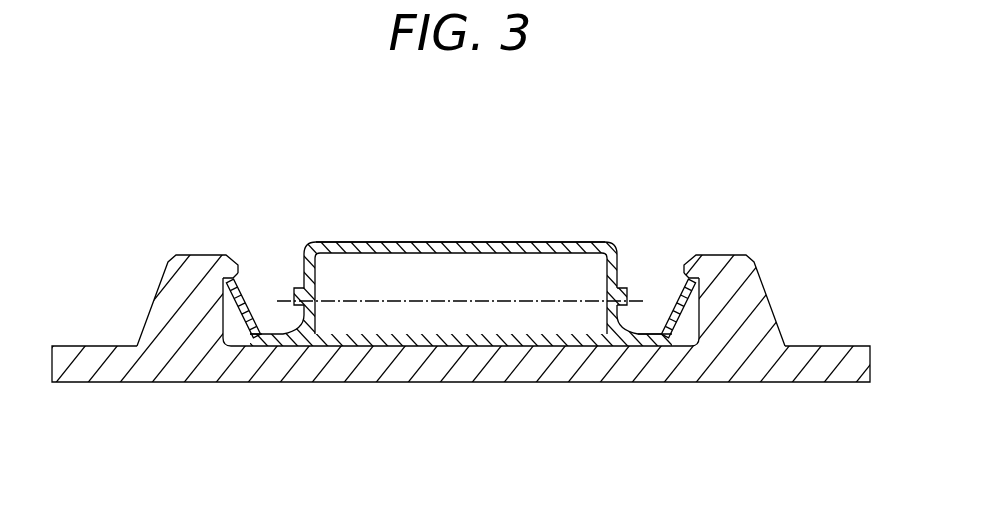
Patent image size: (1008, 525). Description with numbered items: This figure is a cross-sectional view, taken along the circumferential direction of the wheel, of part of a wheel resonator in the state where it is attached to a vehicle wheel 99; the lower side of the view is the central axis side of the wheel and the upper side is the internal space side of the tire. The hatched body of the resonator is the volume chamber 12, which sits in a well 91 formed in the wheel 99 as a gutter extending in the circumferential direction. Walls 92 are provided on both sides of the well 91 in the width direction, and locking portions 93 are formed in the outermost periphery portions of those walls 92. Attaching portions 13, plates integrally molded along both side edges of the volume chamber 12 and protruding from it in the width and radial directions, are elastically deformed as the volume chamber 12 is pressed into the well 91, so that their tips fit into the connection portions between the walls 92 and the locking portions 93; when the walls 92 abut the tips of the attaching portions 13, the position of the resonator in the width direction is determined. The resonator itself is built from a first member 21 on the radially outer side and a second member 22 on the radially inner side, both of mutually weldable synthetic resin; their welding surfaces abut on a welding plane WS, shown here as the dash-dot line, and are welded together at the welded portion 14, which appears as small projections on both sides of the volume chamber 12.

The volume chamber 12 is at (553, 238).
The attaching portions 13 is at (245, 299).
The welded portion 14 is at (627, 286).
The first member 21 is at (378, 238).
The second member 22 is at (397, 325).
The well 91 is at (237, 341).
The walls 92 is at (212, 302).
The locking portions 93 is at (235, 251).
The wheel 99 is at (775, 390).
The welding plane WS is at (641, 300).